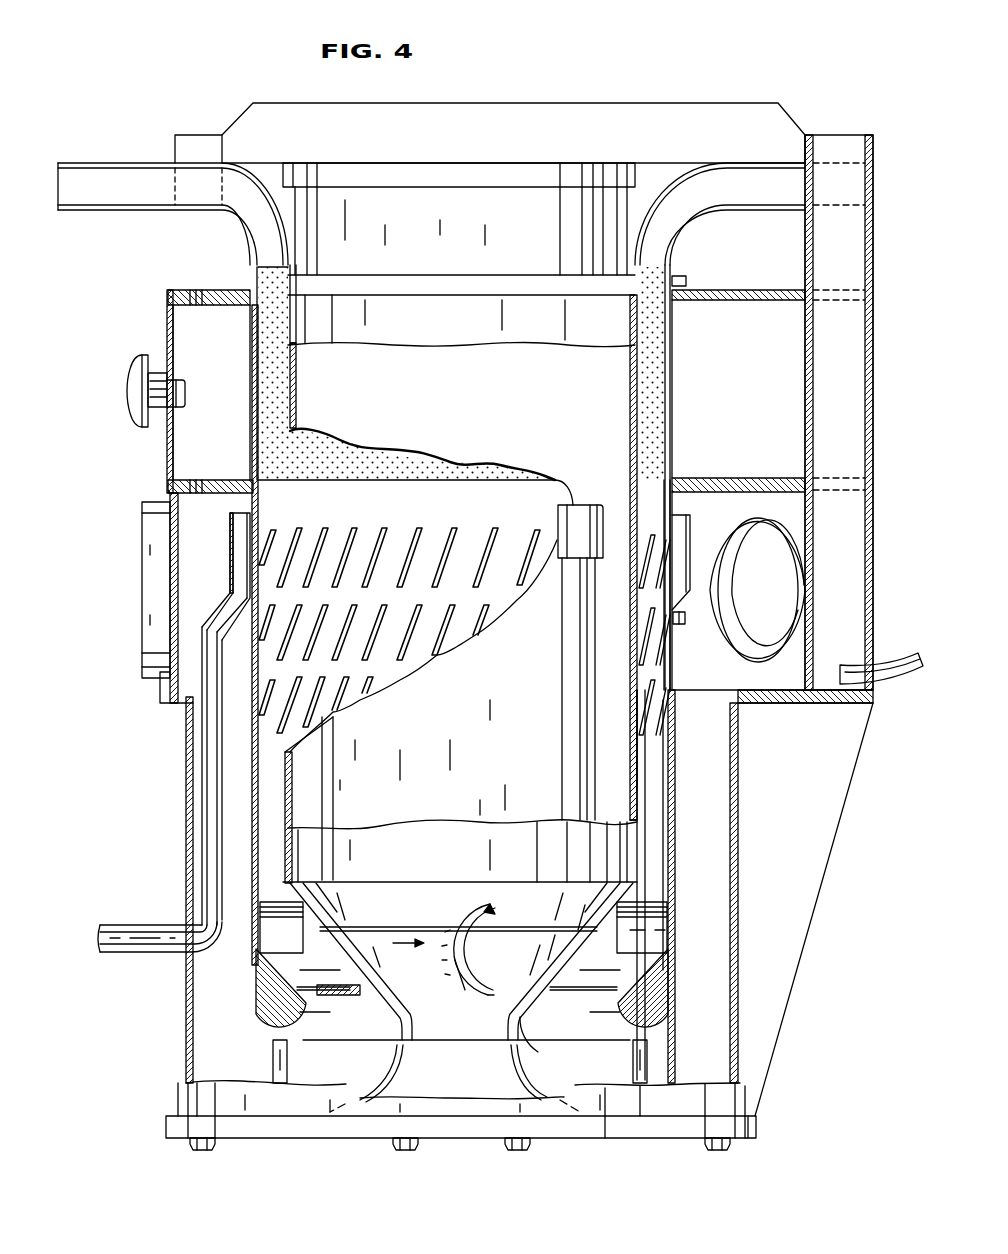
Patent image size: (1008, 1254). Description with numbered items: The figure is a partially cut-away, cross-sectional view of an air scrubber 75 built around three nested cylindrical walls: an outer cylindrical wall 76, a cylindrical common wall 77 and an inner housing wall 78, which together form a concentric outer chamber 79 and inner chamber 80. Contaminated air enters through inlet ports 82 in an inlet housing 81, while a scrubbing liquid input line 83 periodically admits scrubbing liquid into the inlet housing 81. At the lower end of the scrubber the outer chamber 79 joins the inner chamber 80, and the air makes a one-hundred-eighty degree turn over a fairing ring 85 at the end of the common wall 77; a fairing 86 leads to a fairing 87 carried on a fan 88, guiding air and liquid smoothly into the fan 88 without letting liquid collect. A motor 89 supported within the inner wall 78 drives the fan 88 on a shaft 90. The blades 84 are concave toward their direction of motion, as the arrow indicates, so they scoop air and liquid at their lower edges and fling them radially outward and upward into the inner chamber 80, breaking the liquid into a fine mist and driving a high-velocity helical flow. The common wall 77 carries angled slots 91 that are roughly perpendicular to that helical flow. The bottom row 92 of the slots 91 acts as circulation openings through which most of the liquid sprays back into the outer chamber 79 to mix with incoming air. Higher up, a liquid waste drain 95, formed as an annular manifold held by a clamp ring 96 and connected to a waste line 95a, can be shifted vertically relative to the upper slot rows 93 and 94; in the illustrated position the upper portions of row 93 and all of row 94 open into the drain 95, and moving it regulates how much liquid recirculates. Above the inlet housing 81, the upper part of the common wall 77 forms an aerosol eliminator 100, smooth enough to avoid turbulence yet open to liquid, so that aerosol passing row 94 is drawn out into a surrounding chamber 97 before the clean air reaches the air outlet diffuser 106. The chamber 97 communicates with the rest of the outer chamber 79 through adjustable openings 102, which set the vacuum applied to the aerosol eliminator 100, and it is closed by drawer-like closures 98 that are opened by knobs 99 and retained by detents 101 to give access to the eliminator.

The scrubber 75 is at (495, 83).
The outer cylindrical wall 76 is at (740, 809).
The cylindrical common wall 77 is at (675, 778).
The inner housing wall 78 is at (637, 790).
The outer chamber 79 is at (720, 860).
The inner chamber 80 is at (663, 821).
The inlet housing 81 is at (872, 556).
The inlet ports 82 is at (147, 604).
The scrubbing liquid input line 83 is at (886, 668).
The blades 84 is at (469, 974).
The fairing ring 85 is at (668, 1008).
The fairing 86 is at (393, 1077).
The fairing 87 is at (523, 1017).
The fan 88 is at (535, 943).
The motor 89 is at (492, 792).
The shaft 90 is at (443, 915).
The slots 91 is at (368, 547).
The bottom row of slots 92 is at (637, 715).
The upper slot row 93 is at (650, 633).
The upper slot row 94 is at (651, 536).
The liquid waste drain 95 is at (697, 535).
The drain pipe 95a is at (200, 770).
The clamp ring 96 is at (680, 622).
The chamber 97 is at (183, 325).
The drawer-like closures 98 is at (167, 347).
The knobs 99 is at (132, 388).
The aerosol eliminator 100 is at (668, 385).
The detents 101 is at (190, 298).
The openings 102 is at (215, 484).
The air outlet diffuser 106 is at (694, 163).